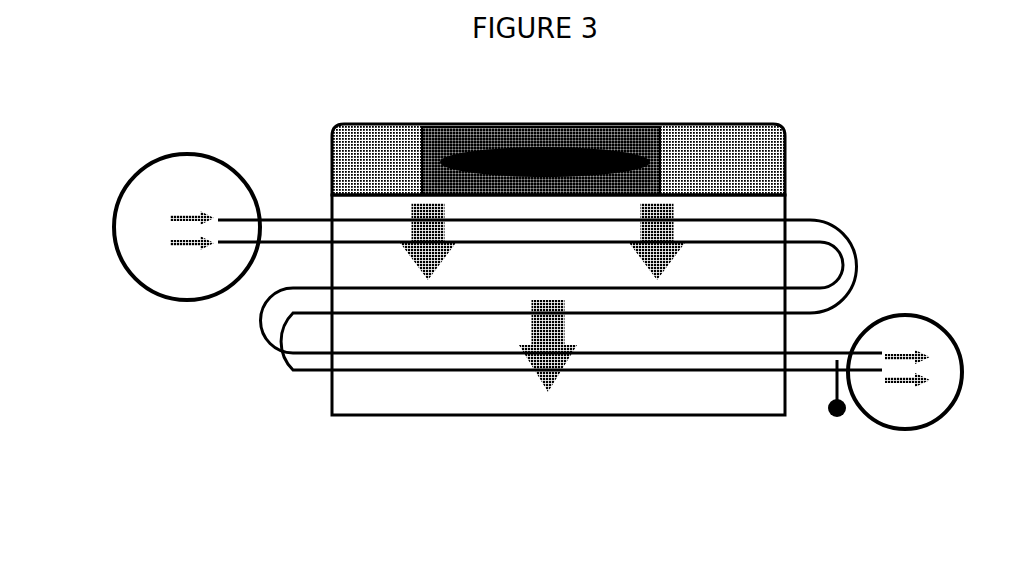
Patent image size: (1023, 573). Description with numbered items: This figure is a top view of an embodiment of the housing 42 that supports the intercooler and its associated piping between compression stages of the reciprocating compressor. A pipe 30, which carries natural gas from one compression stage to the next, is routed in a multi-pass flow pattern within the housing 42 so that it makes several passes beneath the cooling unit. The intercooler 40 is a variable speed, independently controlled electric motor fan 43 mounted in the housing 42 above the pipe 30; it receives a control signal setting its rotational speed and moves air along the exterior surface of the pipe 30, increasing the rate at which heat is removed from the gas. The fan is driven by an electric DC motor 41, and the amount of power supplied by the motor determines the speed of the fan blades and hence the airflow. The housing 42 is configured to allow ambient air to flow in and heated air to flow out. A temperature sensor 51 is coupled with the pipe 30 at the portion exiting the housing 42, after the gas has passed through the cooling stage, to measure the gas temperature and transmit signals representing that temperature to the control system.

The pipe 30 is at (827, 233).
The intercooler 40 is at (746, 162).
The electric motor 41 is at (537, 152).
The housing 42 is at (572, 417).
The electric motor fan 43 is at (537, 149).
The temperature sensor 51 is at (841, 417).